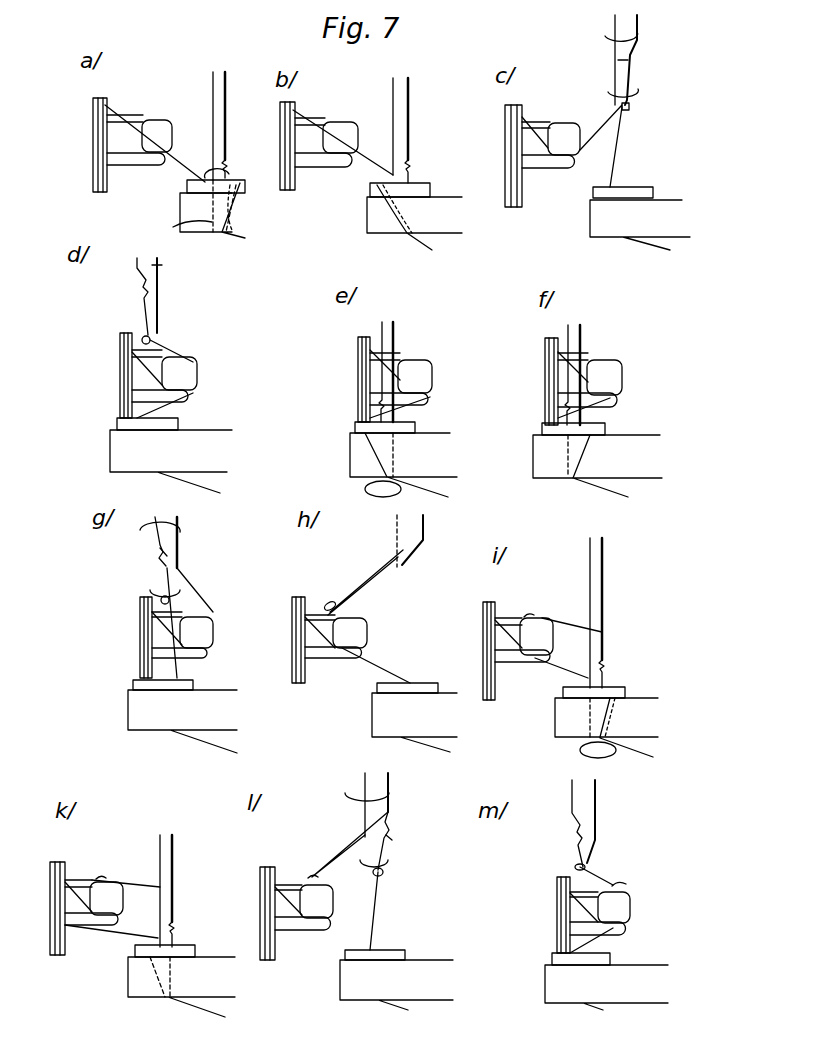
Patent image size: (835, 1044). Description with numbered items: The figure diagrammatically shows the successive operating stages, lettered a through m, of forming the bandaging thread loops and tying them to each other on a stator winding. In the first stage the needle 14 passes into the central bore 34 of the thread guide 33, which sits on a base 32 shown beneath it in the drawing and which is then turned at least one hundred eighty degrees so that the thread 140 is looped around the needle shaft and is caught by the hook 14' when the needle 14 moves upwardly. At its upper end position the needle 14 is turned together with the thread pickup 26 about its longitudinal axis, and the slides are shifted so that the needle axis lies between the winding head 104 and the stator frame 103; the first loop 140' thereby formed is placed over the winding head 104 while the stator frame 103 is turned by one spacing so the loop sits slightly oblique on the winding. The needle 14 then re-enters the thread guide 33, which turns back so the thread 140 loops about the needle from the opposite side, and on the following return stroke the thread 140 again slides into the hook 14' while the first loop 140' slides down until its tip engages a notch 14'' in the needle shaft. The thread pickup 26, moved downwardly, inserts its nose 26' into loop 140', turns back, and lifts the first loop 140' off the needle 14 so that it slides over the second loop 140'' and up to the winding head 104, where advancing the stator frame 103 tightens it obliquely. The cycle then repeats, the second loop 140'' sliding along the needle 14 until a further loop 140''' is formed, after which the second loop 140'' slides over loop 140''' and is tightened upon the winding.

The needle 14 is at (370, 506).
The hook 14' is at (390, 495).
The notch 14'' is at (278, 692).
The thread pickup 26 is at (397, 408).
The nose 26' is at (401, 440).
The base block 32 is at (180, 203).
The thread guide 33 is at (187, 184).
The central bore 34 is at (180, 231).
The stator frame 103 is at (140, 657).
The winding head 104 is at (157, 120).
The thread 140 is at (367, 535).
The first loop 140' is at (369, 603).
The second loop 140'' is at (398, 721).
The further loop 140''' is at (622, 860).